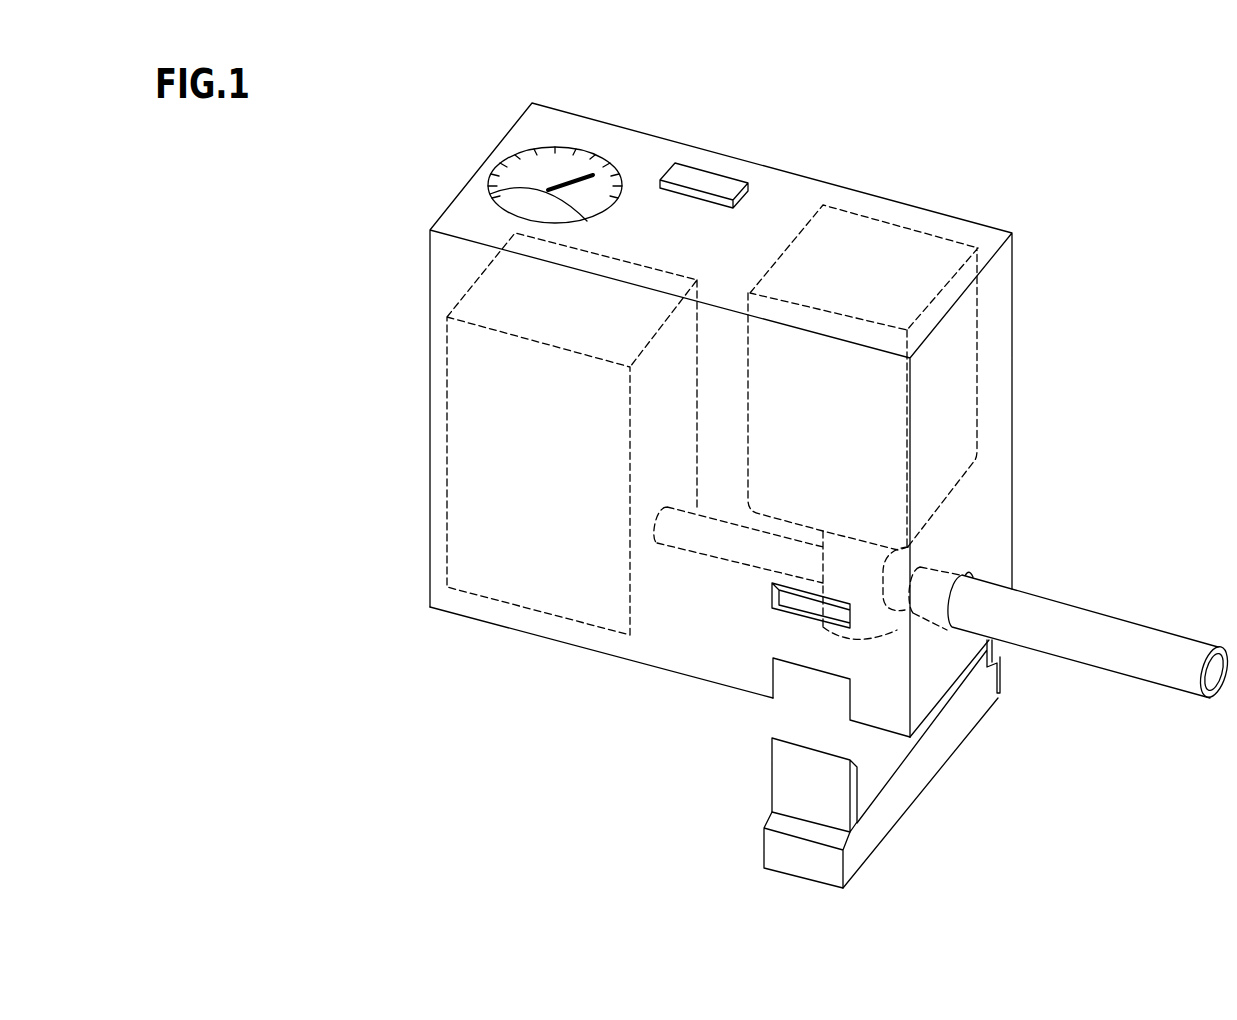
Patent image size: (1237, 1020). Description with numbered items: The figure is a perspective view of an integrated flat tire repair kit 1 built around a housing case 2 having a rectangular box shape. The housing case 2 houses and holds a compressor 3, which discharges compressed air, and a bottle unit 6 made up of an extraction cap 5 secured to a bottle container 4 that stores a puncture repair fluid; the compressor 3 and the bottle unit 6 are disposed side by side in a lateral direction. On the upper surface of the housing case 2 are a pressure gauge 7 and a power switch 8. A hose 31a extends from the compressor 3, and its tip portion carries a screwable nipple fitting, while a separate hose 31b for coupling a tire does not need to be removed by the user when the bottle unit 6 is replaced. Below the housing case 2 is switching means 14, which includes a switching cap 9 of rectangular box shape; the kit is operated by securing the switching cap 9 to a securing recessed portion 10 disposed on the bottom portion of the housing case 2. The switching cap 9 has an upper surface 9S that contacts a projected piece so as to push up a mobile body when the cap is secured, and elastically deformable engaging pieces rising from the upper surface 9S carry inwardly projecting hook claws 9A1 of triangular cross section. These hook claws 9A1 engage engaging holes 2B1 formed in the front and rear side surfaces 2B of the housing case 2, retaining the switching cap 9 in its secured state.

The integrated flat tire repair kit 1 is at (966, 182).
The housing case 2 is at (1012, 355).
The front and rear side surfaces 2B is at (623, 643).
The engaging holes 2B1 is at (743, 565).
The compressor 3 is at (447, 396).
The bottle container 4 is at (980, 432).
The extraction cap 5 is at (905, 560).
The bottle unit 6 is at (1092, 412).
The pressure gauge 7 is at (536, 174).
The power switch 8 is at (698, 180).
The switching cap 9 is at (880, 820).
The hook claws 9A1 is at (857, 762).
The upper surface 9S is at (900, 749).
The securing recessed portion 10 is at (800, 694).
The switching means 14 is at (776, 885).
The hose 31a is at (697, 553).
The hose 31b is at (1063, 637).